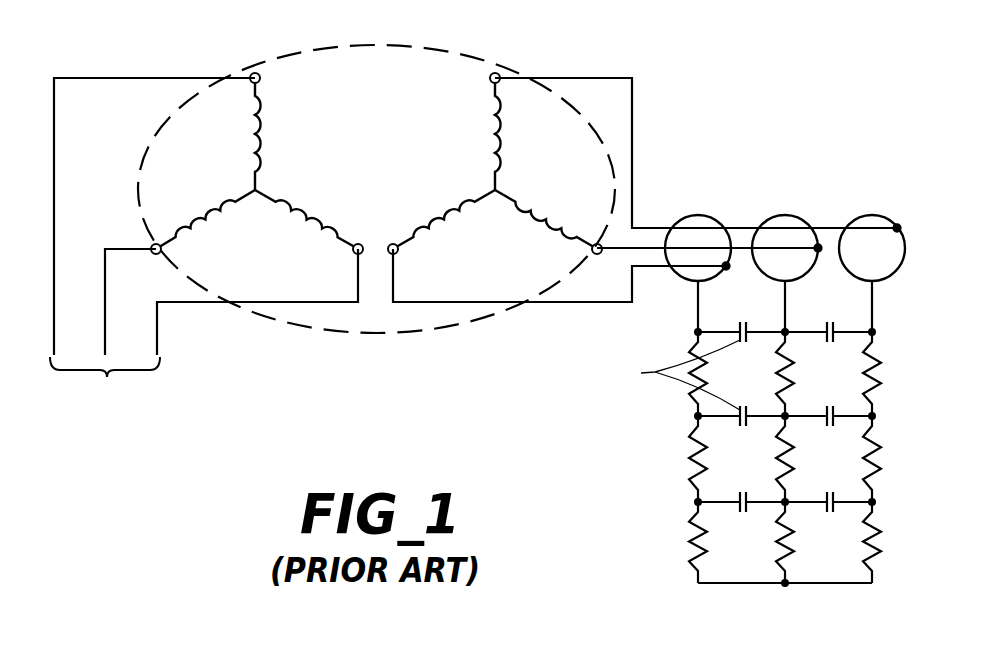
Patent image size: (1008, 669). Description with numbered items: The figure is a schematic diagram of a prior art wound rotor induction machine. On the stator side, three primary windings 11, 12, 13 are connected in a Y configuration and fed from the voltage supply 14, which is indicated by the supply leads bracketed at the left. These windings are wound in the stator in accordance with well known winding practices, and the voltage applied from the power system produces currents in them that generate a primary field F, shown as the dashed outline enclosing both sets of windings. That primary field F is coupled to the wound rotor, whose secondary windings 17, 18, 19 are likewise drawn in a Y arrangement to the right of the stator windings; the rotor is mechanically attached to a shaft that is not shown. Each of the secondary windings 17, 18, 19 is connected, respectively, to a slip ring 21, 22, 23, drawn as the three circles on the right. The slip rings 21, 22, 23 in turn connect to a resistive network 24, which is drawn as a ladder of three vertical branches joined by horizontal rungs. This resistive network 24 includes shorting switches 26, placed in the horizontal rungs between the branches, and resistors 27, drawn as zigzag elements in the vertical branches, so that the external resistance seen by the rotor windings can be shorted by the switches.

The primary field F is at (395, 48).
The primary winding 11 is at (263, 126).
The primary winding 12 is at (213, 205).
The primary winding 13 is at (297, 216).
The voltage supply 14 is at (206, 240).
The rotor winding 17 is at (497, 134).
The rotor winding 18 is at (440, 216).
The rotor winding 19 is at (548, 206).
The slip ring 21 is at (696, 215).
The slip ring 22 is at (785, 215).
The slip ring 23 is at (871, 215).
The resistive network 24 is at (631, 434).
The shorting switches 26 is at (747, 427).
The resistors 27 is at (872, 450).